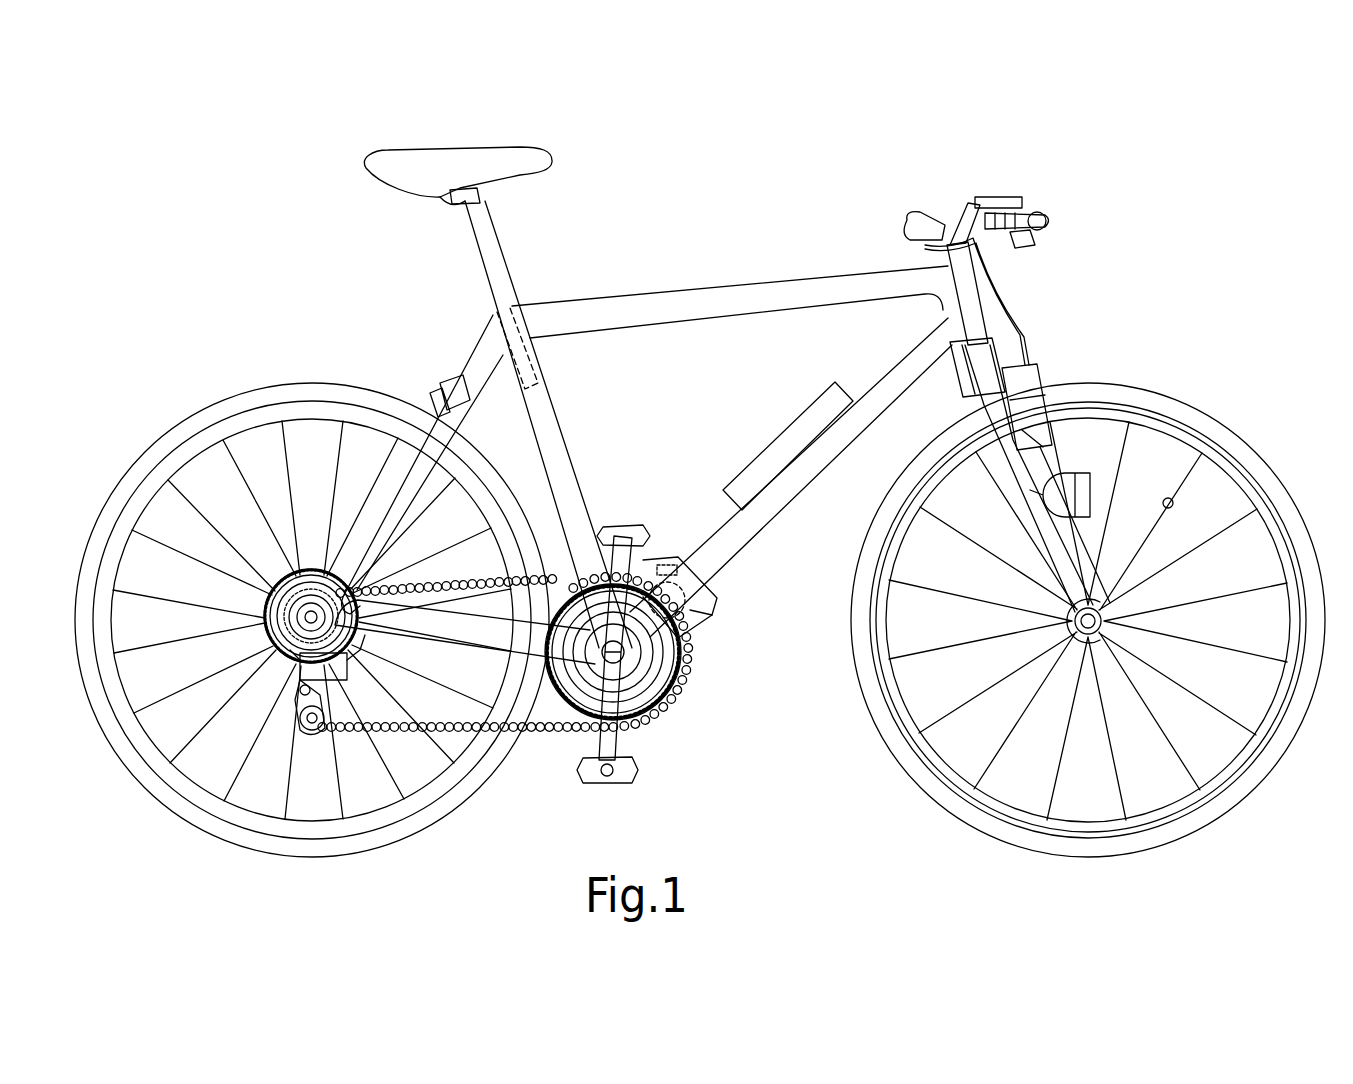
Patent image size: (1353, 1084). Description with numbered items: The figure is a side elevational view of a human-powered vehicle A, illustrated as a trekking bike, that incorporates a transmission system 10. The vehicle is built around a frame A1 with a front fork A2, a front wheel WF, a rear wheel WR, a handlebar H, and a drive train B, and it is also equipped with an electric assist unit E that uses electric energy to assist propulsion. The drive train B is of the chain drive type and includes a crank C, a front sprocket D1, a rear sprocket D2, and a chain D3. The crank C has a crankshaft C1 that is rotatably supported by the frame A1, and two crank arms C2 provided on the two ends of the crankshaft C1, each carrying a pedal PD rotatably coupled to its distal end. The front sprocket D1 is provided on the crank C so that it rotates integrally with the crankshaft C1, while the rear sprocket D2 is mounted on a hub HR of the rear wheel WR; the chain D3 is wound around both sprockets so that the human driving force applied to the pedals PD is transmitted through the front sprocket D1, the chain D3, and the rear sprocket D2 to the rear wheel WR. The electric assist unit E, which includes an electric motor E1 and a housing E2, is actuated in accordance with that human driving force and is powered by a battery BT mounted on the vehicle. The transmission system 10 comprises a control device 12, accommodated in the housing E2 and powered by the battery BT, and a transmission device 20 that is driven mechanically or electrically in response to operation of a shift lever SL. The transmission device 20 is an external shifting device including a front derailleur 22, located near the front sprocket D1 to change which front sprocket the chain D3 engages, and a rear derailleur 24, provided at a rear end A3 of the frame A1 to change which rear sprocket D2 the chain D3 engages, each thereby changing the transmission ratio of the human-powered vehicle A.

The human-powered vehicle A is at (1065, 132).
The frame A1 is at (780, 247).
The front fork A2 is at (1020, 528).
The rear end A3 is at (325, 575).
The rear wheel WR is at (225, 385).
The front wheel WF is at (1180, 385).
The handlebar H is at (1045, 232).
The shift lever SL is at (1022, 250).
The battery BT is at (778, 433).
The transmission system 10 is at (690, 447).
The control device 12 is at (680, 568).
The transmission device 20 is at (416, 557).
The front derailleur 22 is at (534, 487).
The rear derailleur 24 is at (370, 725).
The pedal PD is at (622, 525).
The crank C is at (722, 748).
The crankshaft C1 is at (672, 690).
The crank arm C2 is at (640, 555).
The electric assist unit E is at (774, 600).
The electric motor E1 is at (700, 603).
The housing E2 is at (700, 640).
The front sprocket D1 is at (552, 735).
The rear sprocket D2 is at (265, 582).
The chain D3 is at (412, 735).
The hub HR is at (365, 640).
The drive train B is at (692, 805).